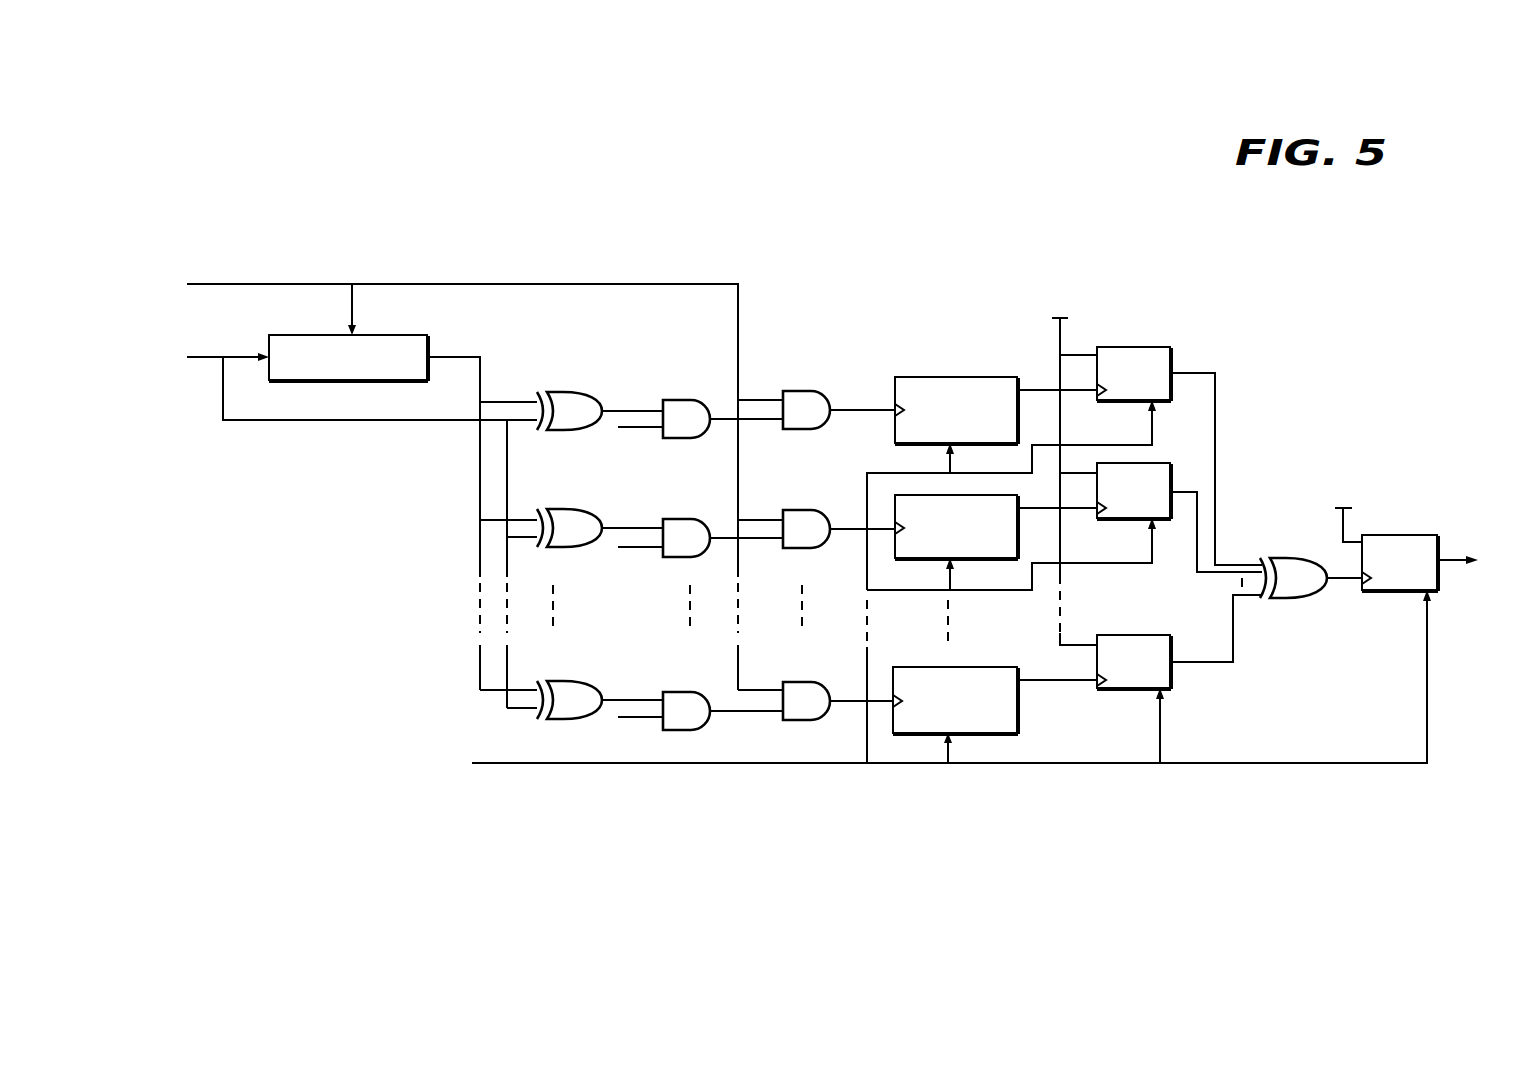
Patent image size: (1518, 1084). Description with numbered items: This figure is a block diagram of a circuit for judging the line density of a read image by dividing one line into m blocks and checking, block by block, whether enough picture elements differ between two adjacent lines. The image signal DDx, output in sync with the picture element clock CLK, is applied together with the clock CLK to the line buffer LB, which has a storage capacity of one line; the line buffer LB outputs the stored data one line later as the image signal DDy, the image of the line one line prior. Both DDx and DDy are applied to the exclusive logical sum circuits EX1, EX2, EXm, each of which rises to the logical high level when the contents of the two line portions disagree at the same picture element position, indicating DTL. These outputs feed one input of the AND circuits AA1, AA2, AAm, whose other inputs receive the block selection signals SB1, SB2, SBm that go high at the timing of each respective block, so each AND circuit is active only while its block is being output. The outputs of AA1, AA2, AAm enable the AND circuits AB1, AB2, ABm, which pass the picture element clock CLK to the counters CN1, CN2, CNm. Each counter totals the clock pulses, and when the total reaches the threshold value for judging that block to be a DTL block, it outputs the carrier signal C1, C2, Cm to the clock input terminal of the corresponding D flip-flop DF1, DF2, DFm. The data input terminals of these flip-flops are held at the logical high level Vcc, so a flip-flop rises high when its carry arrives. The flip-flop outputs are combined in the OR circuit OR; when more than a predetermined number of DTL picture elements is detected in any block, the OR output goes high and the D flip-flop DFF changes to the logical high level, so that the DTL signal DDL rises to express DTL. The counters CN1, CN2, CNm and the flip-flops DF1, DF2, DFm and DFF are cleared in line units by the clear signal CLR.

The picture element clock CLK is at (462, 478).
The image signal DDx is at (339, 378).
The image signal of one line prior DDy is at (469, 353).
The line buffer LB is at (427, 380).
The exclusive logical sum circuit EX1 is at (567, 391).
The exclusive logical sum circuit EX2 is at (567, 509).
The exclusive logical sum circuit EXm is at (567, 681).
The block selection signal SB1 is at (623, 444).
The block selection signal SB2 is at (629, 571).
The block selection signal SBm is at (626, 738).
The AND circuit AA1 is at (681, 399).
The AND circuit AA2 is at (681, 519).
The AND circuit AAm is at (681, 691).
The AND circuit AB1 is at (797, 390).
The AND circuit AB2 is at (797, 509).
The AND circuit ABm is at (797, 681).
The counter CN1 is at (930, 376).
The counter CN2 is at (900, 494).
The counter CNm is at (920, 667).
The carrier signal C1 is at (1040, 391).
The carrier signal C2 is at (1037, 509).
The carrier signal Cm is at (1062, 682).
The logical high level supply Vcc is at (1190, 463).
The D flip-flop DF1 is at (1132, 345).
The D flip-flop DF2 is at (1179, 495).
The D flip-flop DFm is at (1172, 668).
The OR circuit OR is at (1311, 600).
The D flip-flop DFF is at (1401, 533).
The DTL signal DDL is at (1466, 544).
The clear signal CLR is at (926, 592).